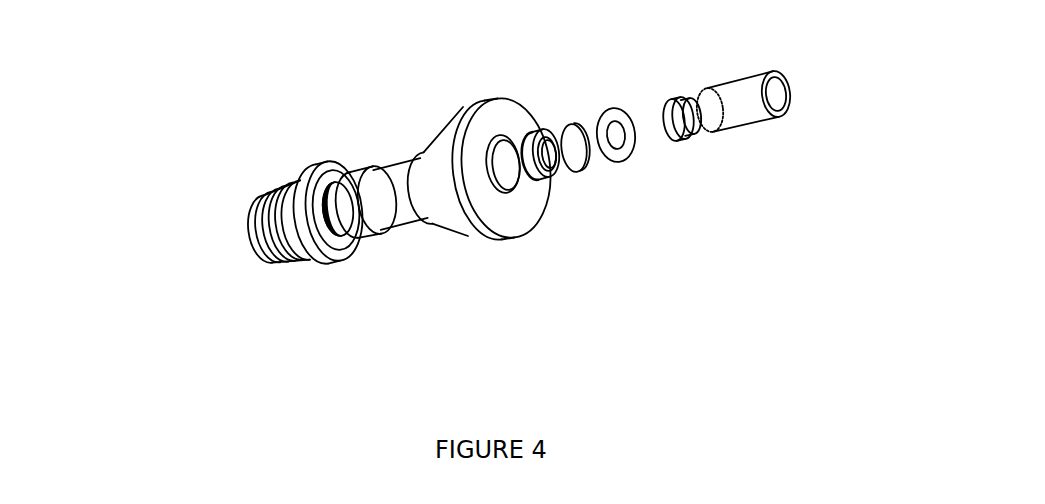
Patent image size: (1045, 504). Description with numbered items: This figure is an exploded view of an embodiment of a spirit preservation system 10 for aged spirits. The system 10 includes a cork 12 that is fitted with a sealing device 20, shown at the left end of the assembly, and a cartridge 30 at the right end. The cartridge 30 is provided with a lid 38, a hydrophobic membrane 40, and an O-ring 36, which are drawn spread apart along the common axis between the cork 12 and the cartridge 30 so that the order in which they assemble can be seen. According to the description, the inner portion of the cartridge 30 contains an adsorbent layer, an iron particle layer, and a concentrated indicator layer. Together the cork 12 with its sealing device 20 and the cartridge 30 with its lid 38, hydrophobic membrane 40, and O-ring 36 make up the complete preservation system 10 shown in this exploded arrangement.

The spirit preservation system 10 is at (324, 87).
The sealing device 20 is at (277, 210).
The cork 12 is at (486, 228).
The lid 38 is at (522, 138).
The hydrophobic membrane 40 is at (577, 152).
The O-ring 36 is at (601, 121).
The cartridge 30 is at (738, 118).